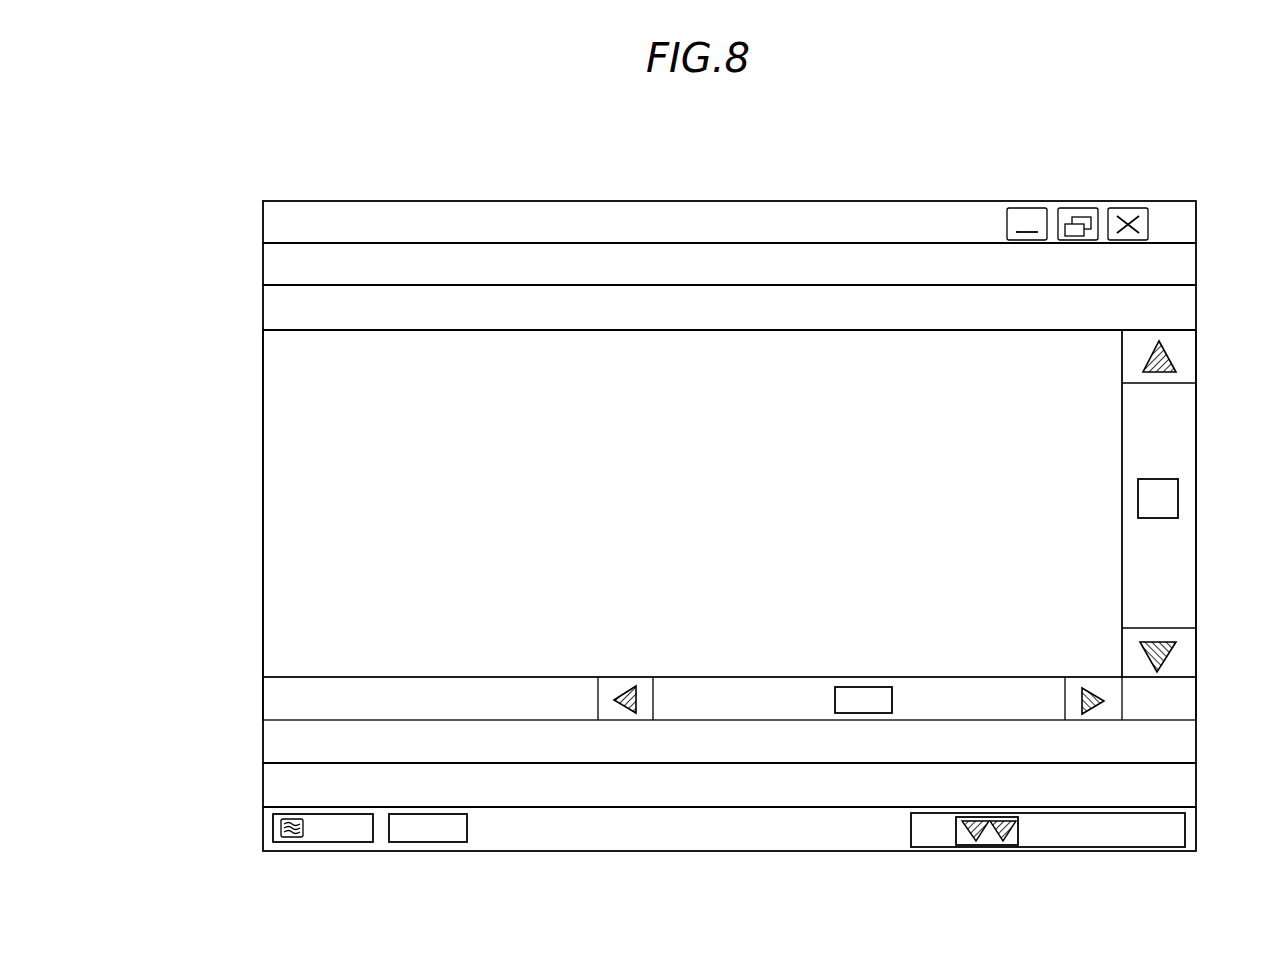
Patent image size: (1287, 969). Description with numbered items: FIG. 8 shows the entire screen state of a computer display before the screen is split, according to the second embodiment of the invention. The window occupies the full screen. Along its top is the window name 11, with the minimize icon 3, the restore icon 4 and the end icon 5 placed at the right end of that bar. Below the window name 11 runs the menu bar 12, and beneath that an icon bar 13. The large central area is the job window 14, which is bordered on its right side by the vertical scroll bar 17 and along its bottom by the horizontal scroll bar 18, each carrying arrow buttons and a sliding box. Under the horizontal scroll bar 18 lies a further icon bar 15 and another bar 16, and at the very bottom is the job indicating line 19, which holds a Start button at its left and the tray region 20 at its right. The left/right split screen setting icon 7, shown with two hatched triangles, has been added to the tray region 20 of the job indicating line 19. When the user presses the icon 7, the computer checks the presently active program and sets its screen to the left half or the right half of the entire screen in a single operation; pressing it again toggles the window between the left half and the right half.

The minimize icon 3 is at (1027, 187).
The restore icon 4 is at (1078, 189).
The end icon 5 is at (1133, 189).
The left/right split screen setting icon 7 is at (985, 864).
The window name 11 is at (699, 227).
The menu bar 12 is at (699, 273).
The icon bar 13 is at (699, 315).
The job window 14 is at (662, 503).
The icon bar 15 is at (699, 747).
The information bar 16 is at (699, 791).
The vertical scroll bar 17 is at (1194, 503).
The horizontal scroll bar 18 is at (729, 793).
The job indicating line 19 is at (335, 834).
The tray region 20 is at (1048, 865).